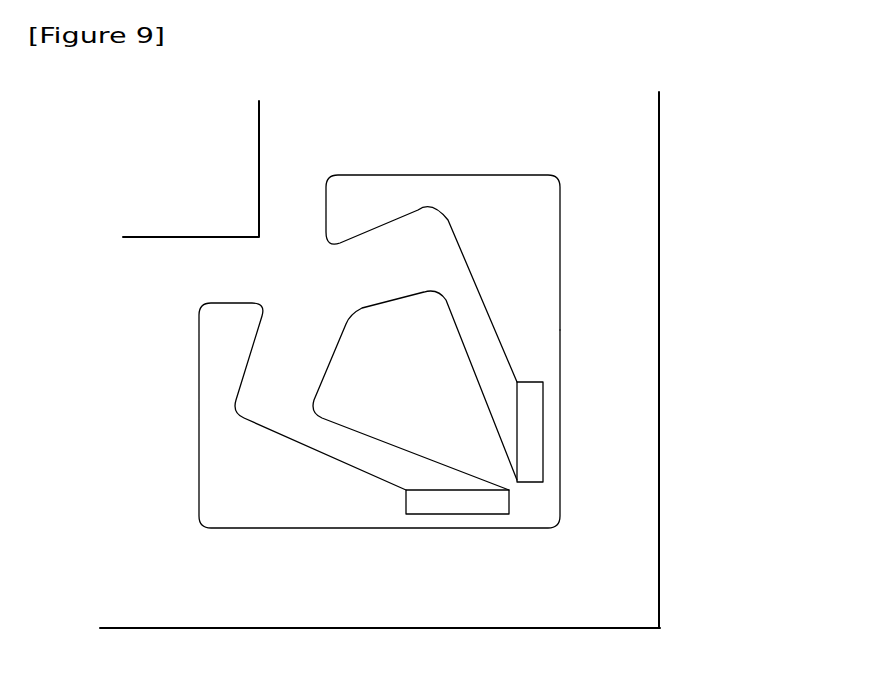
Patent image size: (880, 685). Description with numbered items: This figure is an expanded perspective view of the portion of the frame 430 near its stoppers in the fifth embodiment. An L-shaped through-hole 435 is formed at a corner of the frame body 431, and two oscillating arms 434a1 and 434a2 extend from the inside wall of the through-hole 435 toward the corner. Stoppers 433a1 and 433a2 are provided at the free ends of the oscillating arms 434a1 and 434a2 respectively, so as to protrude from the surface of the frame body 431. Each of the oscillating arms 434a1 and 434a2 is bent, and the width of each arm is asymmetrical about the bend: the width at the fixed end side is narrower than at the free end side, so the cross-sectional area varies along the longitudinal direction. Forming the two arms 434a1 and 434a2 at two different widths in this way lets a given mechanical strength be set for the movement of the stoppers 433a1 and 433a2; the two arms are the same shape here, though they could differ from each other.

The frame 430 is at (668, 166).
The frame body 431 is at (660, 241).
The stopper 433a1 is at (455, 507).
The stopper 433a2 is at (533, 457).
The oscillating arm 434a1 is at (328, 445).
The oscillating arm 434a2 is at (483, 323).
The through-hole 435 is at (245, 523).